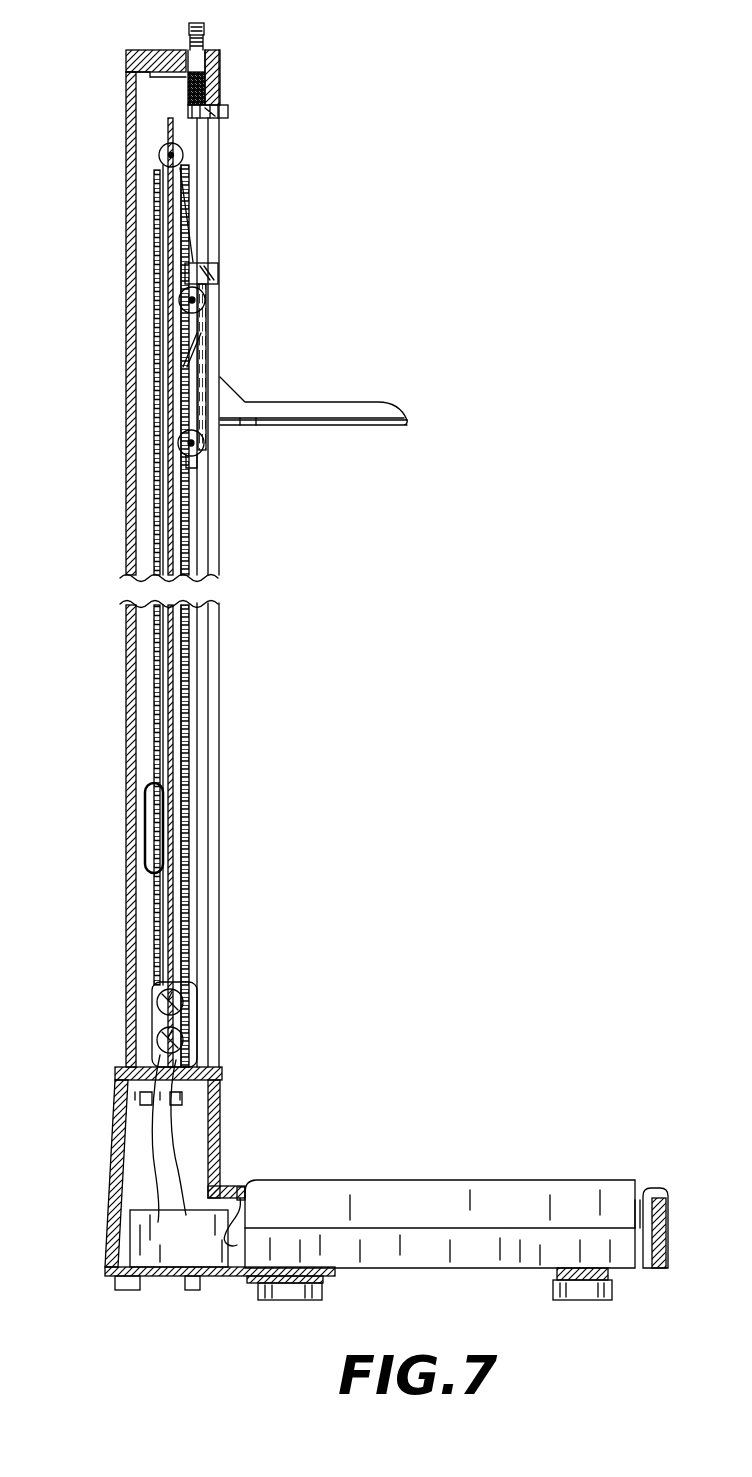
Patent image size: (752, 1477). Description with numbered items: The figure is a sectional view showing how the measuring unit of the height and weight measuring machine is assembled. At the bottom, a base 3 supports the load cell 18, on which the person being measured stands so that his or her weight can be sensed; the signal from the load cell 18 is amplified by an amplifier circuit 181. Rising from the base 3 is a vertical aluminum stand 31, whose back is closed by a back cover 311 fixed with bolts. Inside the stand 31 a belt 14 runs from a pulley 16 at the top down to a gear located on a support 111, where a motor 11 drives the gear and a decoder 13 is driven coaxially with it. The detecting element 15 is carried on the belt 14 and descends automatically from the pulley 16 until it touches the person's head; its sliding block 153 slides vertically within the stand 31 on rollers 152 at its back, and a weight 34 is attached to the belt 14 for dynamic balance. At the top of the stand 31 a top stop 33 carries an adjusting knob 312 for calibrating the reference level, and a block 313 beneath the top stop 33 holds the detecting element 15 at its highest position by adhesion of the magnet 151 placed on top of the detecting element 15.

The base 3 is at (220, 1118).
The motor 11 is at (160, 1040).
The decoder 13 is at (158, 997).
The belt 14 is at (190, 690).
The detecting element 15 is at (325, 410).
The pulley 16 is at (176, 155).
The load cell 18 is at (498, 1196).
The vertical aluminum stand 31 is at (210, 870).
The top stop 33 is at (132, 60).
The weight 34 is at (153, 810).
The support 111 is at (198, 1021).
The magnet 151 is at (205, 270).
The rollers 152 is at (205, 300).
The sliding block 153 is at (196, 363).
The amplifier circuit 181 is at (292, 1292).
The back cover 311 is at (126, 414).
The adjusting knob 312 is at (207, 42).
The block 313 is at (230, 110).